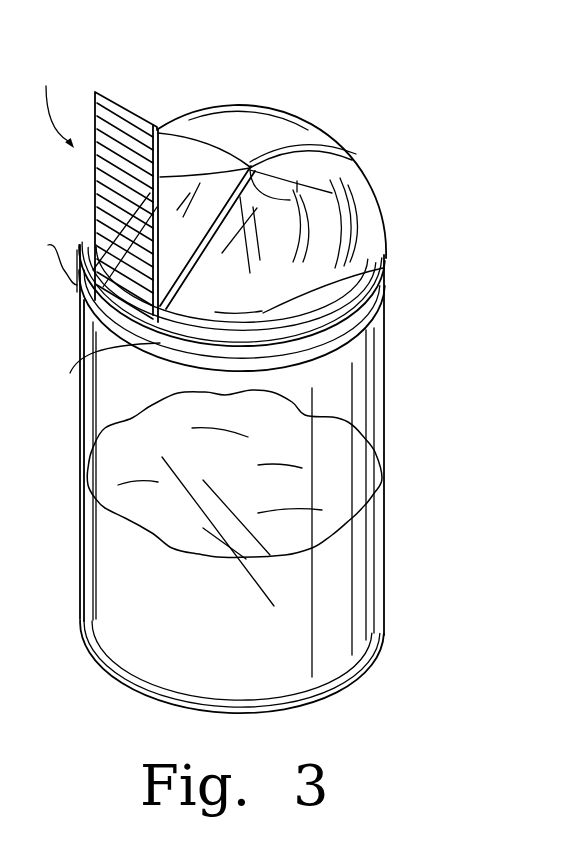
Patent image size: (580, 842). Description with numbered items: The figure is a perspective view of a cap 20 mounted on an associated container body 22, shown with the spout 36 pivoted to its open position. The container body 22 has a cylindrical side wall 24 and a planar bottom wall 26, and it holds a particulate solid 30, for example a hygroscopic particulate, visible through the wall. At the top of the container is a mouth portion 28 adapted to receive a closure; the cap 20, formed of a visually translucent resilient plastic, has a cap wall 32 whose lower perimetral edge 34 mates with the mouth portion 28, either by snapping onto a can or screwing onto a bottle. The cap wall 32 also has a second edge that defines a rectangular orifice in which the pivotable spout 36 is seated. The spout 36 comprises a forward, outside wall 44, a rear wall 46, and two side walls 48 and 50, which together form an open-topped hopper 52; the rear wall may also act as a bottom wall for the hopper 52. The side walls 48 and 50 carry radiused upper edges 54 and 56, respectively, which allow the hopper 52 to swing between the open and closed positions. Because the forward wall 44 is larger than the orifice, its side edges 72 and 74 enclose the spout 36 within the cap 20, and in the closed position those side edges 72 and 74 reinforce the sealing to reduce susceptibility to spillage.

The cap 20 is at (414, 174).
The container body 22 is at (417, 527).
The cylindrical side wall 24 is at (78, 589).
The planar bottom wall 26 is at (142, 700).
The mouth portion 28 is at (346, 285).
The particulate solid 30 is at (212, 640).
The cap wall 32 is at (283, 123).
The lower perimetral edge 34 is at (385, 303).
The spout 36 is at (48, 102).
The forward outside wall 44 is at (95, 212).
The rear wall 46 is at (195, 140).
The side wall 48 is at (278, 124).
The side wall 50 is at (158, 108).
The open-topped hopper 52 is at (172, 106).
The radiused upper edge 54 is at (342, 159).
The radiused upper edge 56 is at (128, 96).
The side edge 72 is at (102, 371).
The side edge 74 is at (47, 254).